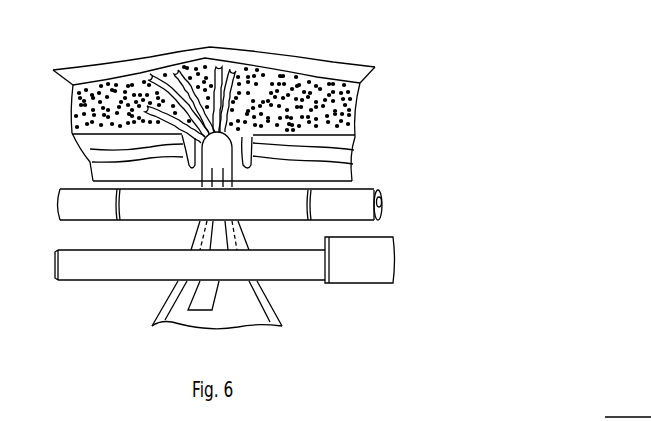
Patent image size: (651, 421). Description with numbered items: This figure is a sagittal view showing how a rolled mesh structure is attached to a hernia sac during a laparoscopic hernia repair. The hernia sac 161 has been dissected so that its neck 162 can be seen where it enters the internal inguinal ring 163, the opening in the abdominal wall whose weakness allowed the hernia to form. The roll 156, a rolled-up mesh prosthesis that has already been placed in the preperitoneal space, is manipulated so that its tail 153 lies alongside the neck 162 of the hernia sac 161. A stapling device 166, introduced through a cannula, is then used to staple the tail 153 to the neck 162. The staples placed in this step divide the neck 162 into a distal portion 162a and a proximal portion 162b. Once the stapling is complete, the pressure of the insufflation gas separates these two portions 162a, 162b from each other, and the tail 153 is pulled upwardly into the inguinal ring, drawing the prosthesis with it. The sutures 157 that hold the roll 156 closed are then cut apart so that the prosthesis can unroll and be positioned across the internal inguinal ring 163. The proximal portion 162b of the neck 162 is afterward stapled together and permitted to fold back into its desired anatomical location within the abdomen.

The tail 153 is at (217, 288).
The roll 156 is at (383, 197).
The sutures 157 is at (88, 186).
The hernia sac 161 is at (217, 159).
The neck 162 is at (195, 238).
The distal portion 162a is at (232, 117).
The proximal portion 162b is at (171, 300).
The internal inguinal ring 163 is at (85, 153).
The stapling device 166 is at (322, 284).